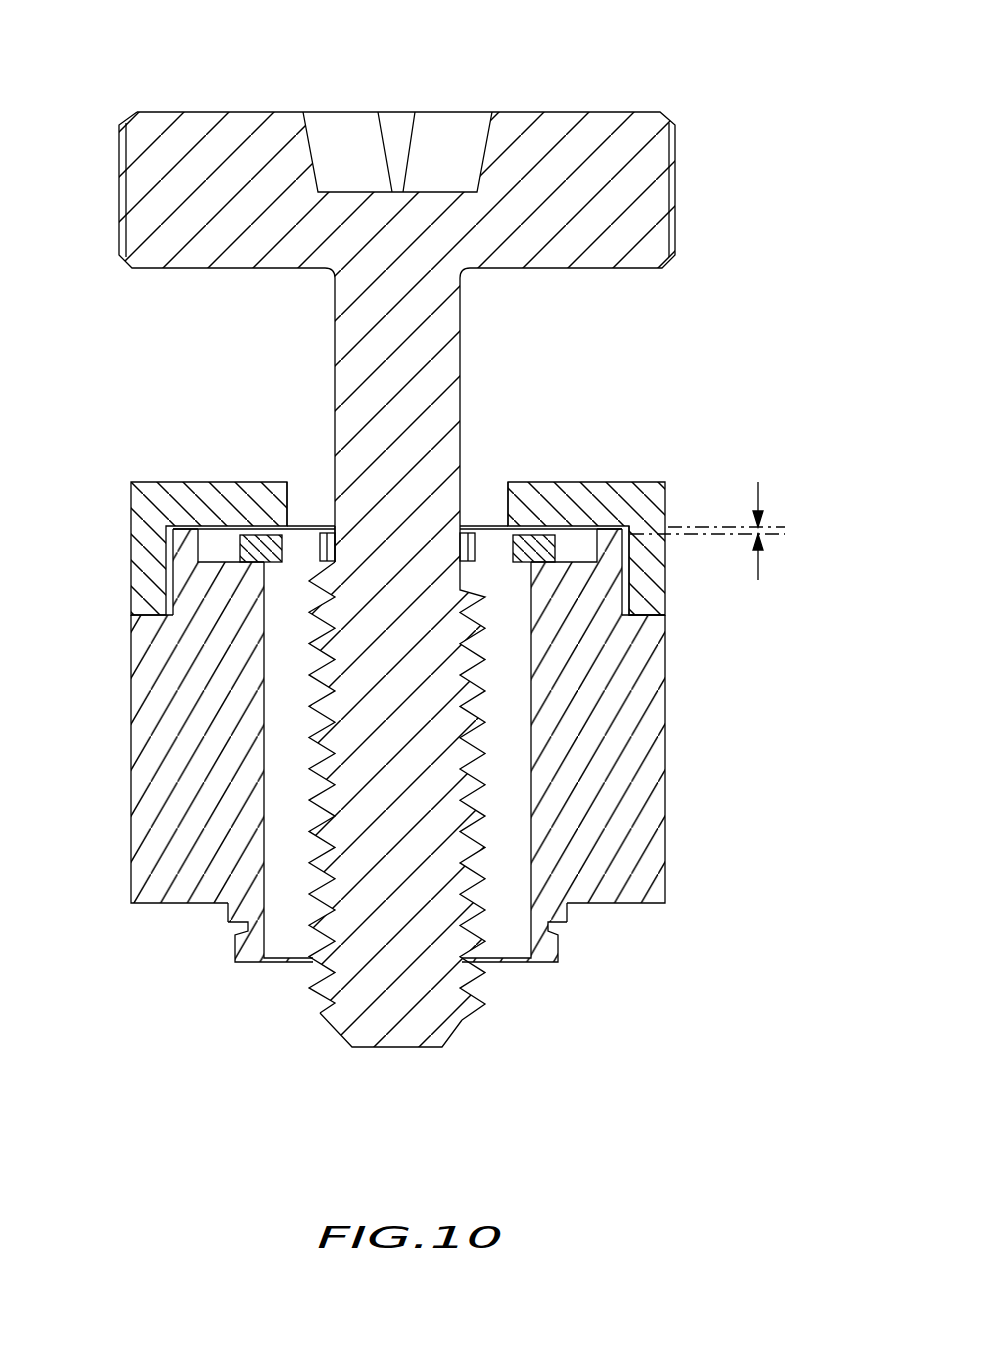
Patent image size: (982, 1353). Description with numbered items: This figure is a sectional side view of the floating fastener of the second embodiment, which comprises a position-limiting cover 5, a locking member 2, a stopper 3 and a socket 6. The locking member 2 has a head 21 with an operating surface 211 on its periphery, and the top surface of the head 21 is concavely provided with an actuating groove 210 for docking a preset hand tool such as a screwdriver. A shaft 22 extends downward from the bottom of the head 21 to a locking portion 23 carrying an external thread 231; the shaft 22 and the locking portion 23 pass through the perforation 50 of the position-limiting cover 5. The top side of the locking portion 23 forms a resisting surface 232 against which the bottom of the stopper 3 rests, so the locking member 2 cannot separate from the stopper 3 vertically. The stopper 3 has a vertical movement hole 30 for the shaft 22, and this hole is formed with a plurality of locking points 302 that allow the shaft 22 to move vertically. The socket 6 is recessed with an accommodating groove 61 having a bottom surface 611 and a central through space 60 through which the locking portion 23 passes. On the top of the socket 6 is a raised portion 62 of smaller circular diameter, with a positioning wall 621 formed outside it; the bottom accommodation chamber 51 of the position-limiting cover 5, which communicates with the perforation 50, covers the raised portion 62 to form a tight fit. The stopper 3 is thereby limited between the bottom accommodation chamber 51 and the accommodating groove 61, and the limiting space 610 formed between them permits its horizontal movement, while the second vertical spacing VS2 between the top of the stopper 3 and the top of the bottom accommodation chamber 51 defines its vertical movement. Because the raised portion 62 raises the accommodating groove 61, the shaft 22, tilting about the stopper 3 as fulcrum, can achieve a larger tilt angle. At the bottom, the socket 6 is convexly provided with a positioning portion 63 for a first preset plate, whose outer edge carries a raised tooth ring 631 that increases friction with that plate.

The locking member 2 is at (402, 550).
The head 21 is at (206, 130).
The actuating groove 210 is at (440, 153).
The operating surface 211 is at (121, 181).
The shaft 22 is at (433, 378).
The locking portion 23 is at (589, 990).
The external thread 231 is at (473, 977).
The resisting surface 232 is at (336, 528).
The stopper 3 is at (243, 518).
The vertical movement hole 30 is at (458, 536).
The locking points 302 is at (512, 553).
The position-limiting cover 5 is at (430, 544).
The perforation 50 is at (304, 500).
The bottom accommodation chamber 51 is at (612, 590).
The socket 6 is at (399, 730).
The through space 60 is at (284, 926).
The accommodating groove 61 is at (200, 543).
The limiting space 610 is at (586, 551).
The bottom surface 611 is at (207, 556).
The raised portion 62 is at (73, 640).
The positioning wall 621 is at (173, 576).
The positioning portion 63 is at (245, 945).
The raised tooth ring 631 is at (224, 911).
The second vertical spacing VS2 is at (728, 531).